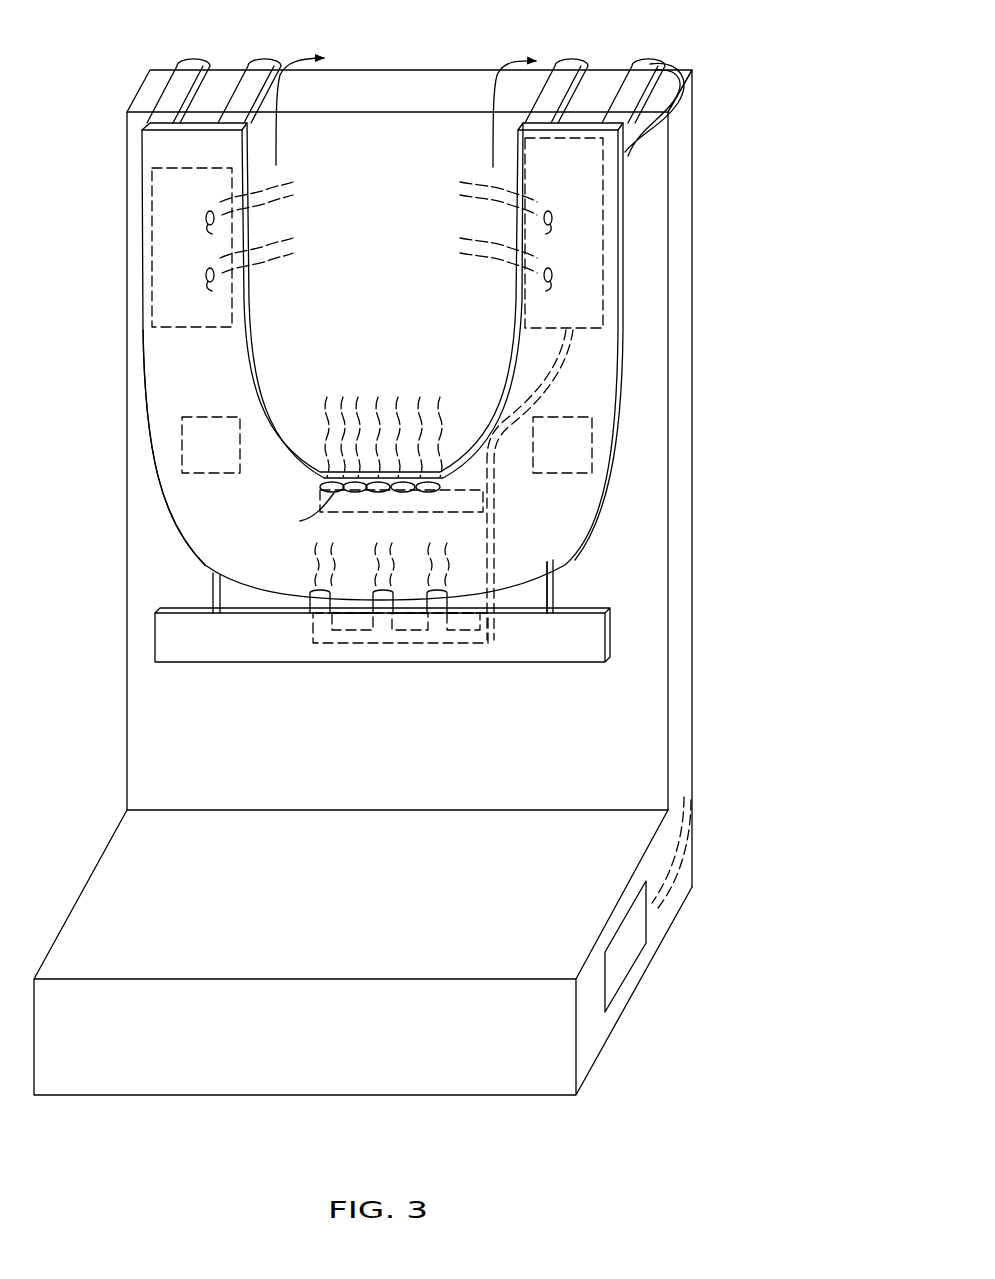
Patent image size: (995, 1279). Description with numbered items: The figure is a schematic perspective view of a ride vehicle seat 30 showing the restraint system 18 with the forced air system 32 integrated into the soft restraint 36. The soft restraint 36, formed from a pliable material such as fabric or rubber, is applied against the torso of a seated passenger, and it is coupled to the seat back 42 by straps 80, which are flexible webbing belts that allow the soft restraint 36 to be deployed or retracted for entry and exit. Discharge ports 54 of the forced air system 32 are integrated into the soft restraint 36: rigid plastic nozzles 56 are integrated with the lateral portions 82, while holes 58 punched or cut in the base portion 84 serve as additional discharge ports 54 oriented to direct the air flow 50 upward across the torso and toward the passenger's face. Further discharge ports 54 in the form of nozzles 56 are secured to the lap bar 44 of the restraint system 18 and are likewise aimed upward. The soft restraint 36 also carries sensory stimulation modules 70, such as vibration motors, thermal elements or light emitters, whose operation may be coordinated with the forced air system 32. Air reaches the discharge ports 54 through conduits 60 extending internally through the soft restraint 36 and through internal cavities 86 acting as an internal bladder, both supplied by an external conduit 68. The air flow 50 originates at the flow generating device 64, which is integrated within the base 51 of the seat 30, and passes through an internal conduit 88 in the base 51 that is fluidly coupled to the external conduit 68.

The restraint system 18 is at (79, 131).
The seat 30 is at (709, 666).
The forced air system 32 is at (480, 291).
The soft restraint 36 is at (172, 382).
The seat back 42 is at (688, 106).
The lap bar 44 is at (187, 651).
The air flow 50 is at (316, 183).
The base 51 is at (532, 1095).
The discharge ports 54 is at (190, 268).
The nozzles 56 is at (205, 213).
The holes 58 is at (403, 494).
The conduits 60 is at (315, 497).
The flow generating device 64 is at (625, 956).
The external conduit 68 is at (664, 85).
The sensory stimulation modules 70 is at (182, 443).
The straps 80 is at (190, 60).
The lateral portions 82 is at (160, 352).
The base portion 84 is at (517, 576).
The internal cavities 86 is at (377, 233).
The internal conduit 88 is at (673, 912).